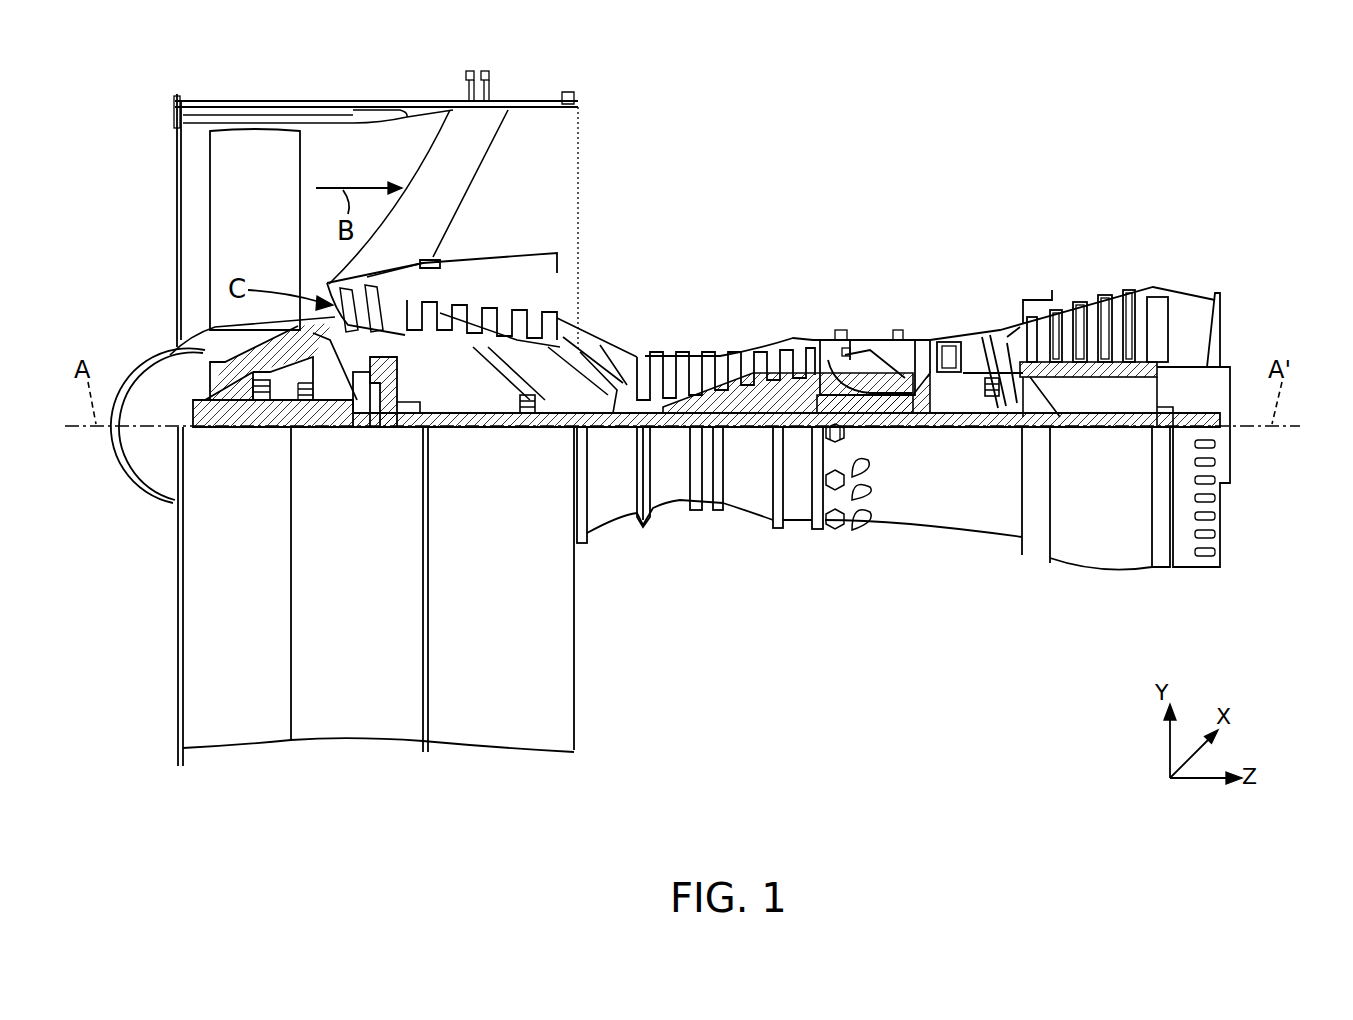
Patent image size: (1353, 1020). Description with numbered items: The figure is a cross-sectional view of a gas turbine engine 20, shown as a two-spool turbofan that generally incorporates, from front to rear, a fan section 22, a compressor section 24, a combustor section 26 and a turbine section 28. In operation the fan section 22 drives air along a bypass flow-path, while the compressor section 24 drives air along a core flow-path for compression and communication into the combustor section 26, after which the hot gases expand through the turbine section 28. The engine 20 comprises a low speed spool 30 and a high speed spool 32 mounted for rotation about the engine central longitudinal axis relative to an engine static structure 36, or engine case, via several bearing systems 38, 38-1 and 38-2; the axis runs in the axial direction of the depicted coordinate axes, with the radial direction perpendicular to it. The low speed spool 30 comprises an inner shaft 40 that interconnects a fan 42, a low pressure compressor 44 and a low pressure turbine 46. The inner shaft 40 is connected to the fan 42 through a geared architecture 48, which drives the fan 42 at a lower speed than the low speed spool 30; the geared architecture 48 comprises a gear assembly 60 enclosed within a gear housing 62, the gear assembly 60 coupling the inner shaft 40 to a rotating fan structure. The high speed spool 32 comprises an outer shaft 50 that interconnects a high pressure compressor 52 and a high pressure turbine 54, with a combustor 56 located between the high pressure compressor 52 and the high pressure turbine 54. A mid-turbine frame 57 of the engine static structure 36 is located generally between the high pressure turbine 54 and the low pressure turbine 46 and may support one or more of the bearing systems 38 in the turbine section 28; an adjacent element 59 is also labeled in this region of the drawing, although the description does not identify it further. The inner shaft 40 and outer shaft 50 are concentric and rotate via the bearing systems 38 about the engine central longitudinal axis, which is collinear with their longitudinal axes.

The gas turbine engine 20 is at (934, 122).
The fan section 22 is at (425, 80).
The compressor section 24 is at (432, 218).
The combustor section 26 is at (935, 218).
The turbine section 28 is at (1160, 218).
The low speed spool 30 is at (757, 448).
The high speed spool 32 is at (790, 385).
The engine static structure 36 is at (357, 722).
The bearing system 38 is at (996, 428).
The bearing system 38-1 is at (262, 402).
The bearing system 38-2 is at (530, 418).
The inner shaft 40 is at (600, 428).
The fan 42 is at (263, 235).
The low pressure compressor 44 is at (530, 312).
The low pressure turbine 46 is at (1088, 305).
The geared architecture 48 is at (386, 452).
The outer shaft 50 is at (878, 413).
The high pressure compressor 52 is at (732, 385).
The high pressure turbine 54 is at (948, 340).
The combustor 56 is at (872, 360).
The mid-turbine frame 57 is at (988, 330).
The turbine hub 59 is at (1005, 340).
The gear assembly 60 is at (397, 410).
The gear housing 62 is at (399, 372).